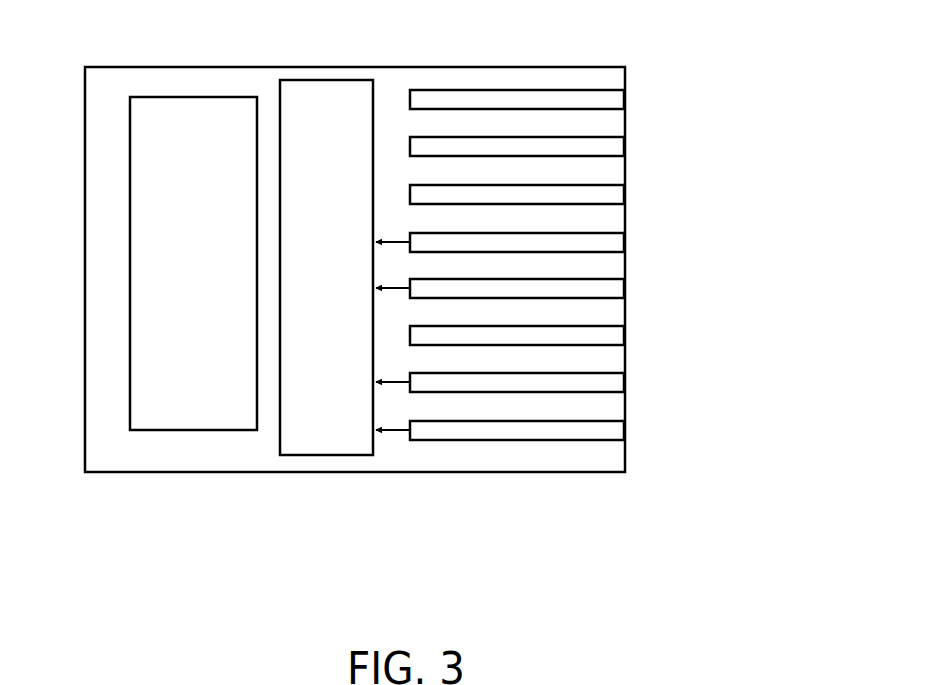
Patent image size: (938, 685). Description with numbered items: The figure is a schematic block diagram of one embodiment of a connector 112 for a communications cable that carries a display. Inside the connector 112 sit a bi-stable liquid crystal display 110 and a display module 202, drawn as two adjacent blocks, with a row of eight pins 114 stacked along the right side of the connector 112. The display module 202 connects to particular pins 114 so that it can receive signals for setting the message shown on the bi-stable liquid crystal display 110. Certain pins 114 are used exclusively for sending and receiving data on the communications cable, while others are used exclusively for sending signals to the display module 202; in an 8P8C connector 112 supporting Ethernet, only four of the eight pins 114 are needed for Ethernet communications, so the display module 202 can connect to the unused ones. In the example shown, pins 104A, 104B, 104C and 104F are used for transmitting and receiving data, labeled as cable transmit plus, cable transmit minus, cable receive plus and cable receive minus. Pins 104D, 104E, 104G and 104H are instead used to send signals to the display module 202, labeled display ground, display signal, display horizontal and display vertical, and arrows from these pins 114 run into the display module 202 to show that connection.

The connector 112 is at (122, 66).
The pins 114 is at (410, 78).
The bi-stable liquid crystal display 110 is at (193, 263).
The display module 202 is at (326, 267).
The pin 104A is at (627, 100).
The pin 104B is at (627, 147).
The pin 104C is at (627, 194).
The pin 104D is at (627, 242).
The pin 104E is at (627, 288).
The pin 104F is at (627, 335).
The pin 104G is at (627, 382).
The pin 104H is at (627, 430).